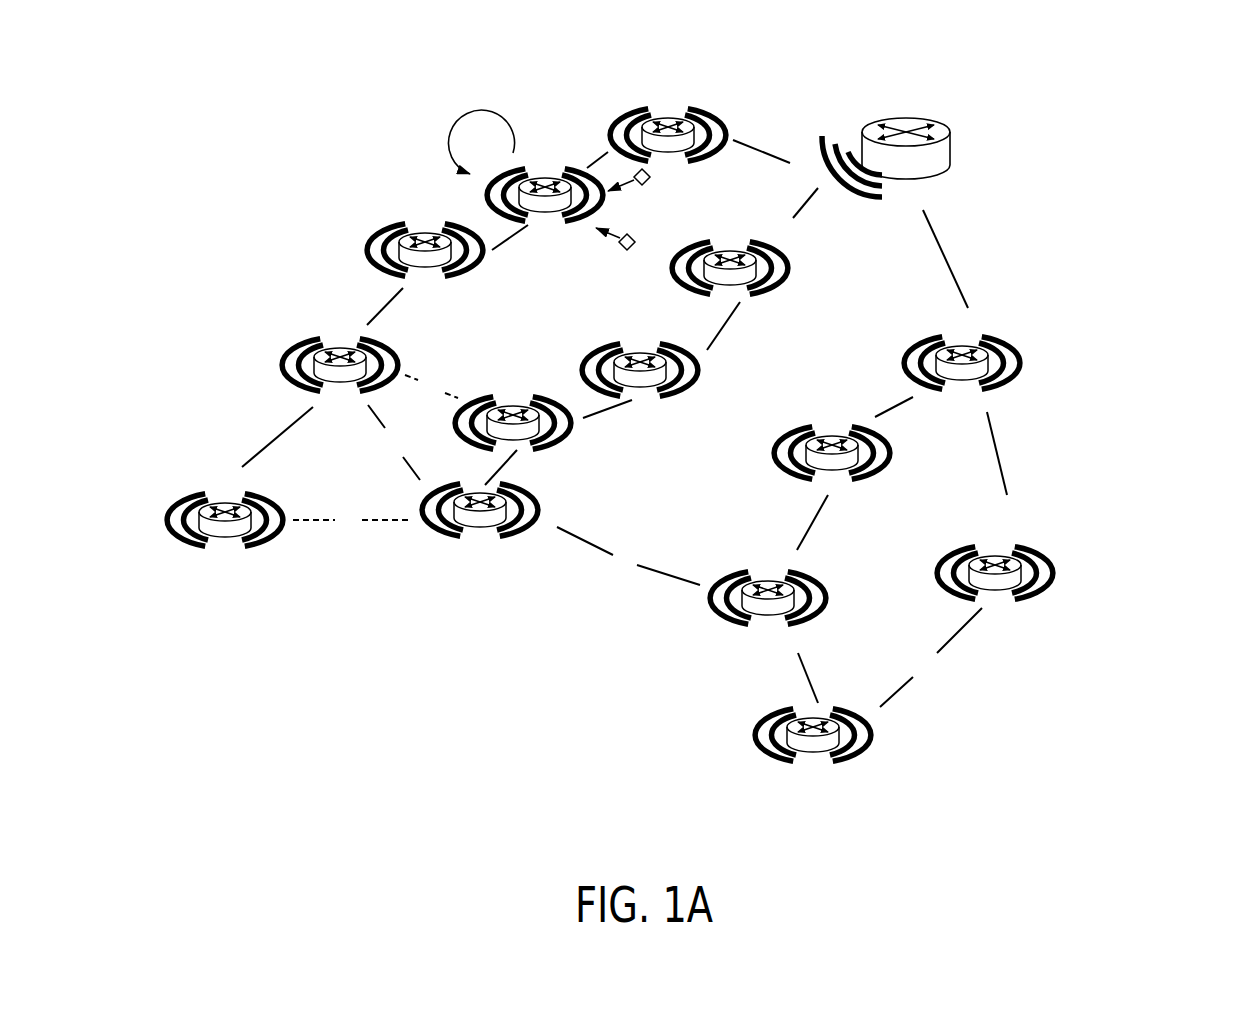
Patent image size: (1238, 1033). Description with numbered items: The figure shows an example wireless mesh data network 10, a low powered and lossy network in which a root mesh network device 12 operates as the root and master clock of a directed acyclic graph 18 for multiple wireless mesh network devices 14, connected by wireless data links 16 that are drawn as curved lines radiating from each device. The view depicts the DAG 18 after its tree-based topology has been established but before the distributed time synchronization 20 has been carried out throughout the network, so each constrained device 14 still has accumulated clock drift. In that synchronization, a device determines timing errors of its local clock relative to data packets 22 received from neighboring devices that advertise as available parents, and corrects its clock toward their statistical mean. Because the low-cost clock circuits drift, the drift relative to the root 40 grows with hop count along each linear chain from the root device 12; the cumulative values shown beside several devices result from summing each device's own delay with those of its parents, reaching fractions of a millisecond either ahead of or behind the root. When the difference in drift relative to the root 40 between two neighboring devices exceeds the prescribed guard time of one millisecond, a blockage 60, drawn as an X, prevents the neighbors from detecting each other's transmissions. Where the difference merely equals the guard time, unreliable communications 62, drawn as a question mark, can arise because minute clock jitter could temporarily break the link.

The wireless mesh data network 10 is at (1132, 180).
The root mesh network device 12 is at (936, 147).
The wireless mesh network device 14 is at (672, 155).
The wireless data link 16 is at (822, 135).
The directed acyclic graph 18 is at (686, 421).
The distributed time synchronization 20 is at (478, 110).
The data packet 22 is at (643, 186).
The drift relative to the root 40 is at (183, 380).
The blockage 60 is at (383, 438).
The unreliable communications 62 is at (436, 368).